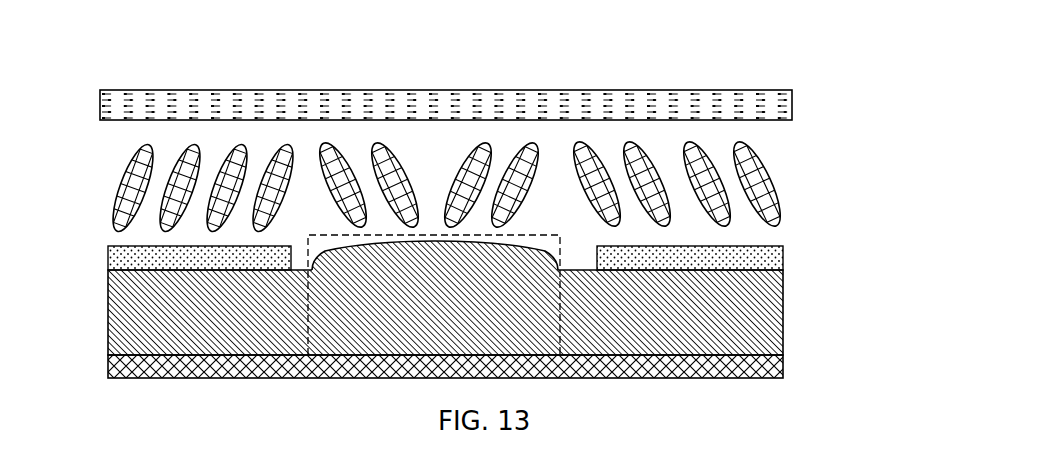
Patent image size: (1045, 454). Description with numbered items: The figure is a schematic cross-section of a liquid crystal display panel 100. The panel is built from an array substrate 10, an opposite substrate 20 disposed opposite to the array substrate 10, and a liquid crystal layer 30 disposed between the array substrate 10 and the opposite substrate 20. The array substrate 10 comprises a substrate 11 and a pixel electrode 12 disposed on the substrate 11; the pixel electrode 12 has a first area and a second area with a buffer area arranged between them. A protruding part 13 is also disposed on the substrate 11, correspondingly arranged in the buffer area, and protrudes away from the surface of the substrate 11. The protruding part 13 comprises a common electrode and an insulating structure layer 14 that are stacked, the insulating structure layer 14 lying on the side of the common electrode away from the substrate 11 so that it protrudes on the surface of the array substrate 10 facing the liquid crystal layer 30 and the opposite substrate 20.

The liquid crystal display panel 100 is at (131, 65).
The opposite substrate 20 is at (768, 104).
The liquid crystal layer 30 is at (784, 185).
The array substrate 10 is at (509, 310).
The substrate 11 is at (479, 370).
The pixel electrode 12 is at (772, 254).
The protruding part 13 is at (566, 297).
The insulating structure layer 14 is at (772, 328).